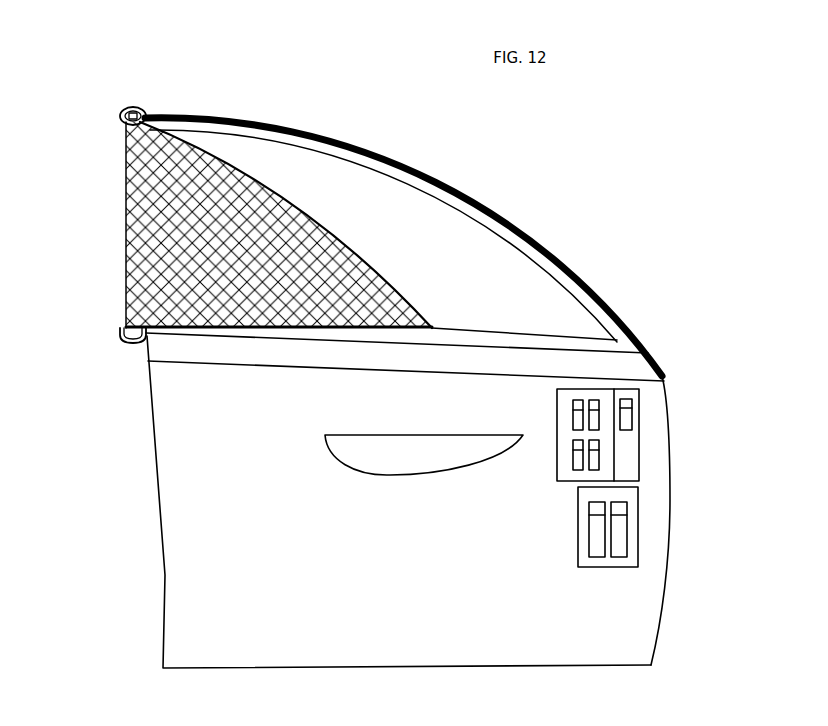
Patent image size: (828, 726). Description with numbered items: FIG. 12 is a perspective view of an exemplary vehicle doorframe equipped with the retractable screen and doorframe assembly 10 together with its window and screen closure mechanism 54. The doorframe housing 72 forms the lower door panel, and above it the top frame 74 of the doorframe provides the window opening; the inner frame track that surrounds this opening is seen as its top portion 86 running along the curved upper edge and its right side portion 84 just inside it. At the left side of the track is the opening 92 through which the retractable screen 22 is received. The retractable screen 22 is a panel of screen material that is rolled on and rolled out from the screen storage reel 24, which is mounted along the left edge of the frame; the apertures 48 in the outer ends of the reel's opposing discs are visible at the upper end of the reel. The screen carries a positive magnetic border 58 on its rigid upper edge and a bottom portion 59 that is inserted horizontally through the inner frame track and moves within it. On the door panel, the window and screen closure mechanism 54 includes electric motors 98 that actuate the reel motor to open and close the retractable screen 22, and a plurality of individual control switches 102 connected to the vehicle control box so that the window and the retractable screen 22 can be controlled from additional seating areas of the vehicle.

The retractable screen and doorframe assembly 10 is at (523, 197).
The retractable screen 22 is at (362, 252).
The screen storage reel 24 is at (124, 191).
The apertures 48 is at (150, 108).
The window and screen closure mechanism 54 is at (578, 480).
The positive magnetic border 58 is at (296, 206).
The bottom portion 59 is at (127, 327).
The doorframe housing 72 is at (565, 640).
The top frame 74 is at (620, 362).
The right side portion 84 is at (550, 278).
The top portion 86 is at (400, 163).
The opening 92 is at (150, 340).
The electric motors 98 is at (410, 455).
The individual control switches 102 is at (558, 406).